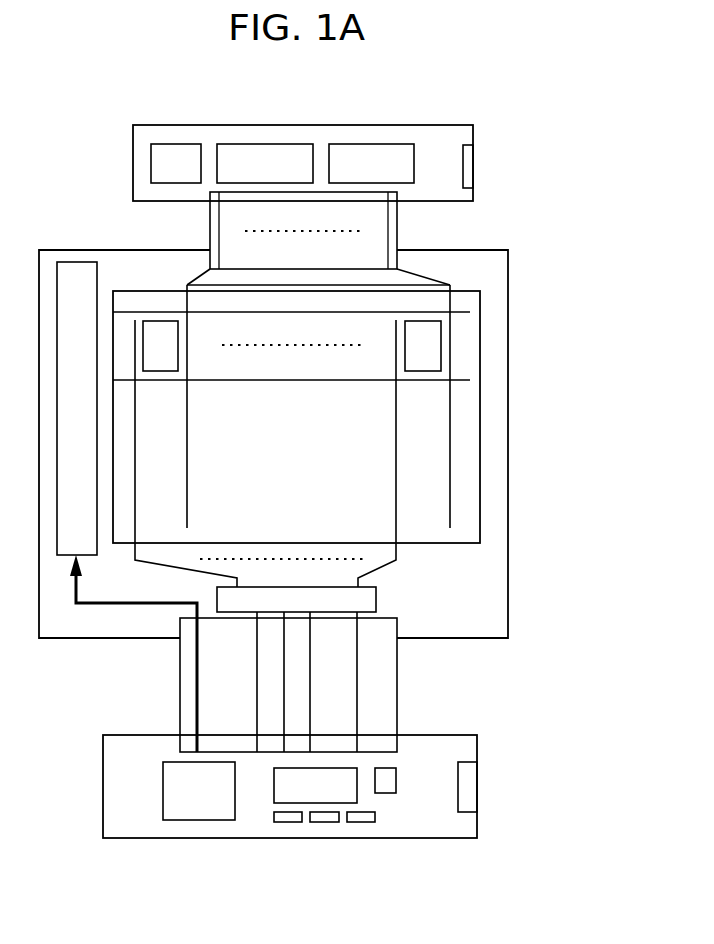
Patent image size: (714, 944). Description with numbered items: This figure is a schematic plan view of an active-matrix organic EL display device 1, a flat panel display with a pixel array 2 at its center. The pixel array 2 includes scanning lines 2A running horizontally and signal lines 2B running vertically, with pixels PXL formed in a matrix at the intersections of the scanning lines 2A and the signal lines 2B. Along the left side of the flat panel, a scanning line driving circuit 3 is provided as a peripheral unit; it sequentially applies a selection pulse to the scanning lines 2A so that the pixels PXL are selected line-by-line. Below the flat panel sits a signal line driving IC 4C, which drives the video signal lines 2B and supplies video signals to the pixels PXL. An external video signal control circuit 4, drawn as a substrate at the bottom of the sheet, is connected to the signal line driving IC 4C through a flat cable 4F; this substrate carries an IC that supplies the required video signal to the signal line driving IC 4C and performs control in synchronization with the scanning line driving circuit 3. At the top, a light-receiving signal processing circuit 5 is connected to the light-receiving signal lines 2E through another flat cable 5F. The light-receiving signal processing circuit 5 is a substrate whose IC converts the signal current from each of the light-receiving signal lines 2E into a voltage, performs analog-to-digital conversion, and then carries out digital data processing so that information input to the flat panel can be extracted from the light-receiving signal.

The display device 1 is at (522, 598).
The pixel array 2 is at (480, 472).
The scanning lines 2A is at (365, 380).
The signal lines 2B is at (178, 567).
The light-receiving signal lines 2E is at (187, 290).
The scanning line driving circuit 3 is at (57, 418).
The video signal control circuit 4 is at (123, 788).
The signal line driving IC 4C is at (367, 598).
The flat cable 4F is at (380, 692).
The light-receiving signal processing circuit 5 is at (302, 136).
The flat cable 5F is at (375, 227).
The pixels PXL is at (441, 343).